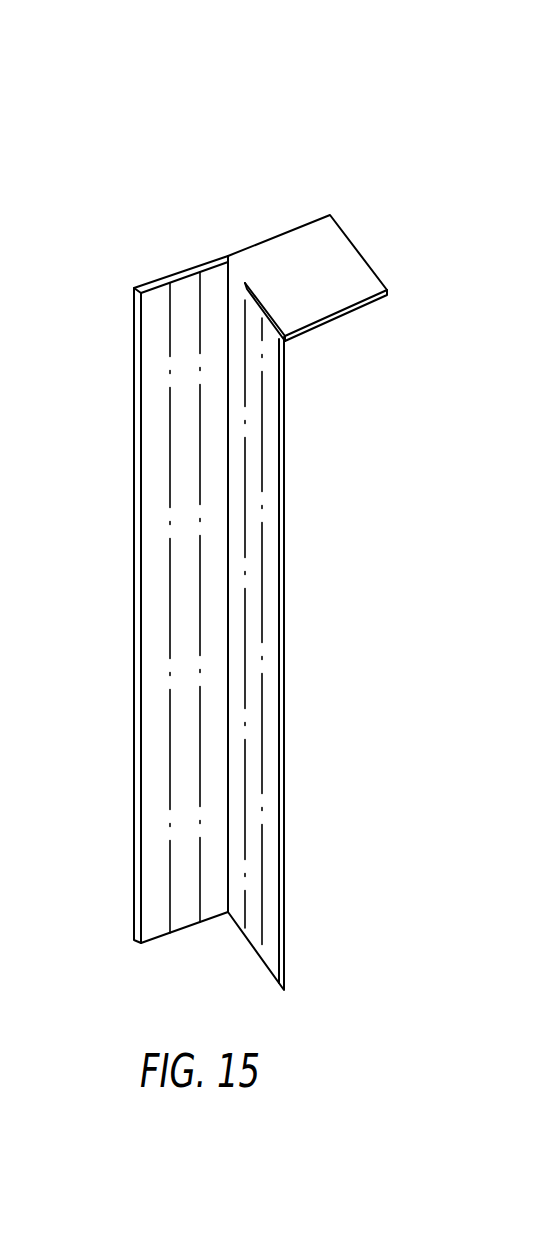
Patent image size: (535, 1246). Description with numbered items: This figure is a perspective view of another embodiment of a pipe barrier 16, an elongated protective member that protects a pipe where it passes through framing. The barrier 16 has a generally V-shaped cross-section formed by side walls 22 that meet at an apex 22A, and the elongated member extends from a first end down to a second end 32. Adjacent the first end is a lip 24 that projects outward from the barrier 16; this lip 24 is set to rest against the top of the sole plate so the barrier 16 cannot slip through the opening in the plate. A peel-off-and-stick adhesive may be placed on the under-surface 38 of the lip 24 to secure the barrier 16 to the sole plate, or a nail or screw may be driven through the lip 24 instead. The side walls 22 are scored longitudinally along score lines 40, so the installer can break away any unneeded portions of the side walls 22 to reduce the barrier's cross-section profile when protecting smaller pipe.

The pipe barrier 16 is at (230, 143).
The side walls 22 is at (152, 470).
The apex 22A is at (223, 893).
The lip 24 is at (333, 233).
The second end 32 is at (263, 969).
The under-surface 38 is at (341, 313).
The score lines 40 is at (310, 600).